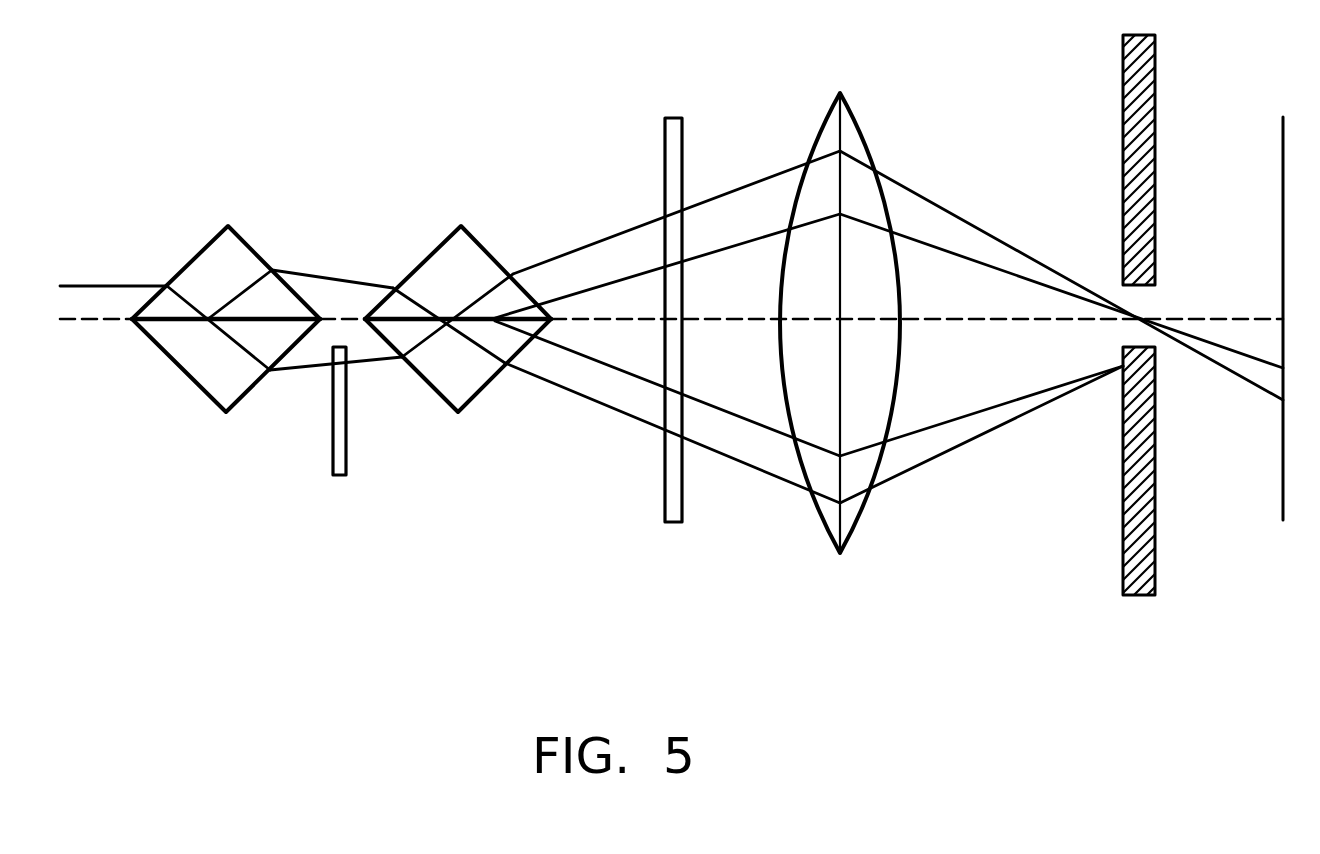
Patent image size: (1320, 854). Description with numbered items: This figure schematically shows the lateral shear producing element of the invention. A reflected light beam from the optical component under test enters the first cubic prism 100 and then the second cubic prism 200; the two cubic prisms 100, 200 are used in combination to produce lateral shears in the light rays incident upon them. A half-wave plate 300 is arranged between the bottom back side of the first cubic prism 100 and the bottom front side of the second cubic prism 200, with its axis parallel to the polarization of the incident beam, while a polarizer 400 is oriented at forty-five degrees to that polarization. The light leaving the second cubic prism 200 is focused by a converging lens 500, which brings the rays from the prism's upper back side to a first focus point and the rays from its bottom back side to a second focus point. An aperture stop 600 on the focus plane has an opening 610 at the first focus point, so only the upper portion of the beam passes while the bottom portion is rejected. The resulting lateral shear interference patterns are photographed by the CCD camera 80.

The first cubic prism 100 is at (228, 214).
The second cubic prism 200 is at (463, 210).
The half-wave plate 300 is at (338, 478).
The polarizer 400 is at (672, 525).
The converging lens 500 is at (840, 555).
The aperture stop 600 is at (1138, 597).
The opening 610 is at (1162, 283).
The CCD camera 80 is at (1283, 520).